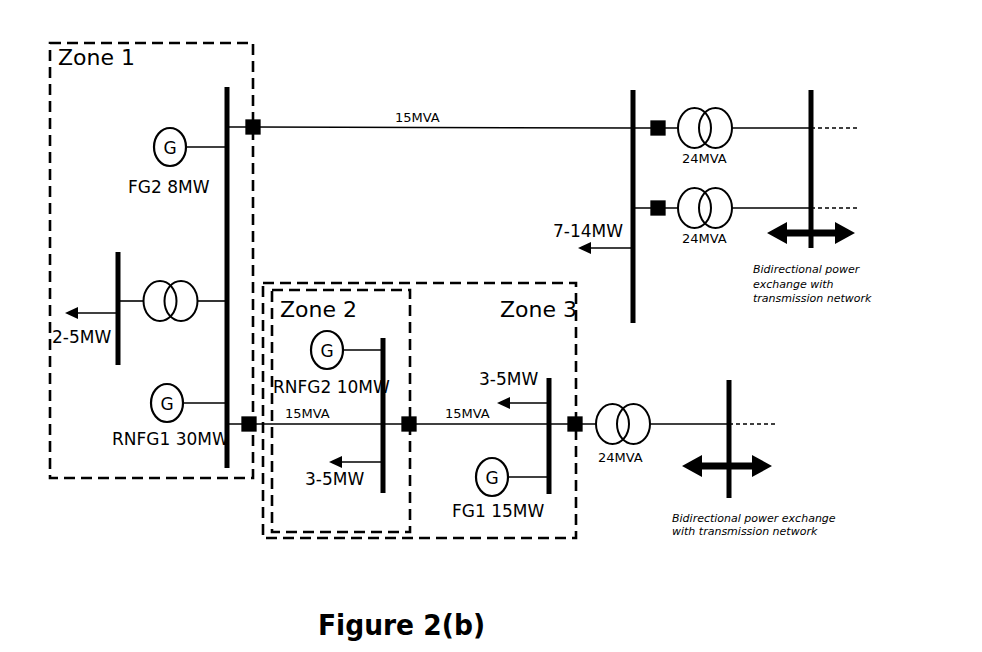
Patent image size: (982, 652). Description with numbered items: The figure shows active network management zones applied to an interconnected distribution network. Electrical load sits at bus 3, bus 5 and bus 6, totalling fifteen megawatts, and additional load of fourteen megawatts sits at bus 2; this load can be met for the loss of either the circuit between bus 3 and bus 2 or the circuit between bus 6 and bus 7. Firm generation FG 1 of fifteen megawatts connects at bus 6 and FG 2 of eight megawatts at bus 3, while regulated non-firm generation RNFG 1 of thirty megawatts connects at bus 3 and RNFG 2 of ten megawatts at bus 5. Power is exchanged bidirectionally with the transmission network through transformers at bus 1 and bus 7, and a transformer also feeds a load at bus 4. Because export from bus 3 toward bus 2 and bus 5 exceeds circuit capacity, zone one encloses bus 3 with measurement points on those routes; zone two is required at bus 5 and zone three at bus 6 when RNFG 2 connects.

The bus 1 is at (811, 156).
The bus 2 is at (633, 193).
The bus 3 is at (228, 265).
The bus 4 is at (118, 296).
The bus 5 is at (383, 404).
The bus 6 is at (549, 424).
The bus 7 is at (729, 427).